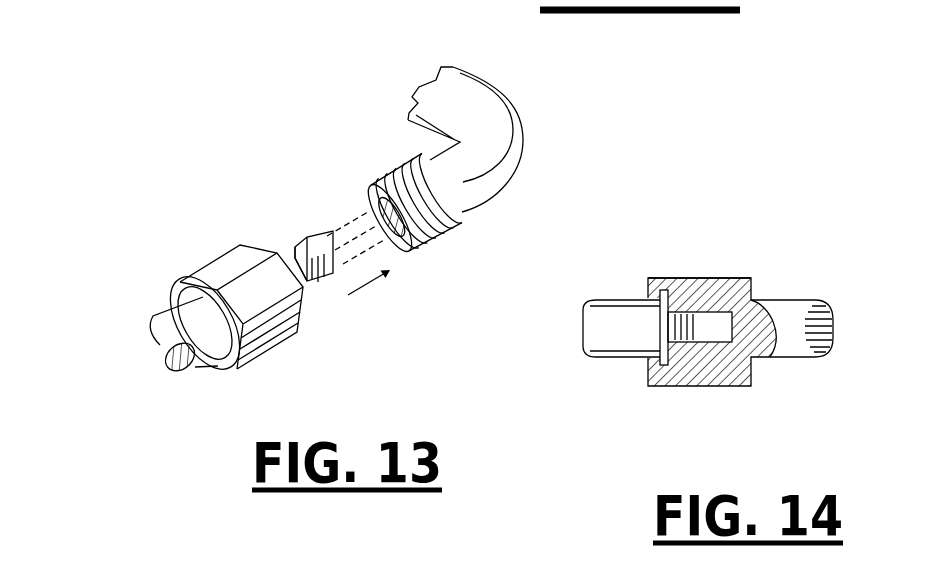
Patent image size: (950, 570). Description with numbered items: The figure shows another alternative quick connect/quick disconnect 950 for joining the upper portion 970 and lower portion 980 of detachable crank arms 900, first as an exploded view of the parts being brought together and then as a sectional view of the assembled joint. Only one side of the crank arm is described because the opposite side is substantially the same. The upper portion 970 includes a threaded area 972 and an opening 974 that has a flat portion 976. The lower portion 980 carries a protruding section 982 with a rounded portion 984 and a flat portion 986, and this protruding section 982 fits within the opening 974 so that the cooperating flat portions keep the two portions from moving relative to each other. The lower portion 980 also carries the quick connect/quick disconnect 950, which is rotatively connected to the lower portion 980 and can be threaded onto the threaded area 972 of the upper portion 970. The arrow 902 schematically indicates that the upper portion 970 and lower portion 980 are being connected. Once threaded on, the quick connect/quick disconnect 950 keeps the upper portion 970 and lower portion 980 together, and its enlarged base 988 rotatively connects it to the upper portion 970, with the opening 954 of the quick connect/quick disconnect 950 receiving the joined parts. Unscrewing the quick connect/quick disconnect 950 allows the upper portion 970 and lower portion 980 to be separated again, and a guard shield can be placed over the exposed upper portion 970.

In FIG. 13, the detachable crank arms 900 is at (110, 90).
In FIG. 13, the quick connect/quick disconnect 950 is at (220, 276).
In FIG. 13, the lower portion of first crank arm 980 is at (170, 350).
In FIG. 14, the lower portion of first crank arm 980 is at (587, 360).
In FIG. 13, the protruding section of lower portion of first crank arm 982 is at (295, 246).
In FIG. 14, the protruding section of lower portion of first crank arm 982 is at (680, 278).
In FIG. 13, the rounded portion 984 is at (310, 238).
In FIG. 13, the flat portion 986 is at (318, 280).
In FIG. 13, the arrow 902 is at (370, 297).
In FIG. 13, the opening 974 is at (396, 226).
In FIG. 13, the flat portion 976 is at (413, 241).
In FIG. 13, the threaded area of upper portion of first crank arm 972 is at (457, 228).
In FIG. 14, the threaded area of upper portion of first crank arm 972 is at (734, 387).
In FIG. 13, the upper portion of first crank arm 970 is at (507, 122).
In FIG. 14, the upper portion of first crank arm 970 is at (813, 290).
In FIG. 14, the opening 954 is at (703, 280).
In FIG. 14, the base 988 is at (650, 380).